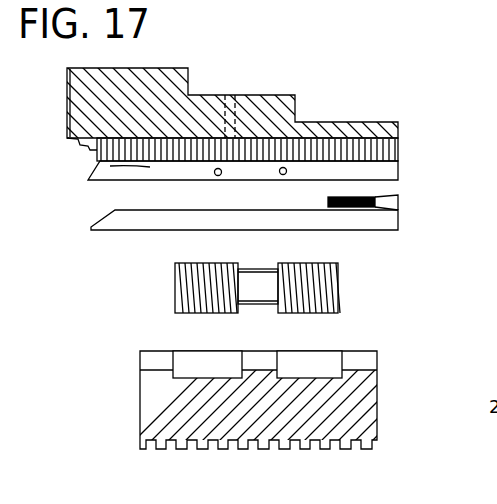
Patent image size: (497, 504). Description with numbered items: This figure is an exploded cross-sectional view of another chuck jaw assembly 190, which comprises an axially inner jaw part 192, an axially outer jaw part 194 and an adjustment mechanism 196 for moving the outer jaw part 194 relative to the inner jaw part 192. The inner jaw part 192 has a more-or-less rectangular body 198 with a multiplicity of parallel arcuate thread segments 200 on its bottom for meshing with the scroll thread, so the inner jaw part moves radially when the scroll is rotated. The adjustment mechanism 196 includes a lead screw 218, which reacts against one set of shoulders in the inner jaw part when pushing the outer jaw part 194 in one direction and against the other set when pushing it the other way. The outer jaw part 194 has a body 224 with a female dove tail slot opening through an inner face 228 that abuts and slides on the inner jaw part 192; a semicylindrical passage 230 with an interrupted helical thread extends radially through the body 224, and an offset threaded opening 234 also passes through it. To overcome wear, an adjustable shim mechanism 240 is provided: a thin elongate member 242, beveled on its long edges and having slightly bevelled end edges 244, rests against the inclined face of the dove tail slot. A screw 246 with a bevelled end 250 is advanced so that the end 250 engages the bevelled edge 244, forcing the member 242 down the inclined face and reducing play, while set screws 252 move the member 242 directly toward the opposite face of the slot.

The chuck jaw assembly 190 is at (384, 72).
The axially inner jaw part 192 is at (265, 400).
The axially outer jaw part 194 is at (388, 110).
The adjustment mechanism 196 is at (230, 294).
The body 198 is at (150, 389).
The arcuate thread segments 200 is at (352, 445).
The lead screw 218 is at (348, 290).
The body 224 is at (80, 85).
The inner face 228 is at (268, 182).
The semicylindrical passage 230 is at (397, 147).
The threaded opening 234 is at (230, 95).
The adjustable shim mechanism 240 is at (257, 226).
The thin elongate member 242 is at (128, 236).
The bevelled end edges 244 is at (112, 210).
The screw 246 is at (324, 201).
The bevelled end 250 is at (398, 196).
The set screws 252 is at (221, 176).